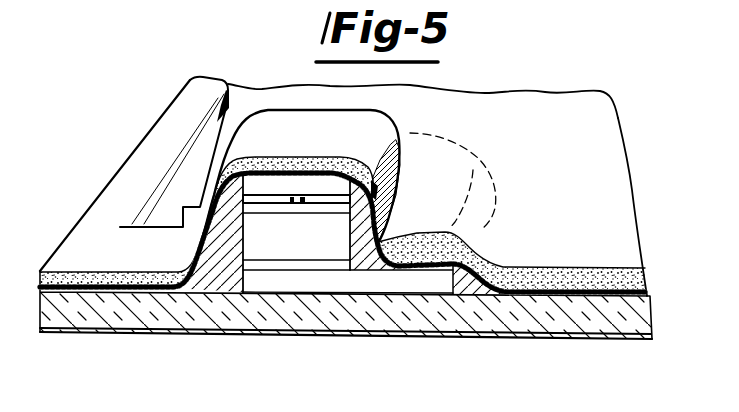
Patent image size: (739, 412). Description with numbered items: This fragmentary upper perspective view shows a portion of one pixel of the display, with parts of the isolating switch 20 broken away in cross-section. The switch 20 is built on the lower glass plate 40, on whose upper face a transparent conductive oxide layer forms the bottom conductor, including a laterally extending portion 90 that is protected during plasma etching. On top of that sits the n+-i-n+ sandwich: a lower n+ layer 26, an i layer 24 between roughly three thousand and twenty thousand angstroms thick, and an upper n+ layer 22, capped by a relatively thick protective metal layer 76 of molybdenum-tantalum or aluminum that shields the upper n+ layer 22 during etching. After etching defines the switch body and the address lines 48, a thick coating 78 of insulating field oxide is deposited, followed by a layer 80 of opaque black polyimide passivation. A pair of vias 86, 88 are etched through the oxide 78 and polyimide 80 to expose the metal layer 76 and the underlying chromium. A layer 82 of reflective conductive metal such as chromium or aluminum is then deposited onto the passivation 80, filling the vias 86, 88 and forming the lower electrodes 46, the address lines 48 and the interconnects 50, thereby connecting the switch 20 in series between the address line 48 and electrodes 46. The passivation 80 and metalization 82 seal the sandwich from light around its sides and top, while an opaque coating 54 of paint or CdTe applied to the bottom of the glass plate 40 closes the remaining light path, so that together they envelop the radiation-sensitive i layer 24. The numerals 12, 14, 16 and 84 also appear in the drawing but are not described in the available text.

The transparent conductive oxide electrode 12 is at (447, 278).
The transparent conductive oxide layer 14 is at (381, 266).
The photovoltaic cell 16 is at (448, 406).
The switch 20 is at (407, 123).
The upper n+ layer 22 is at (252, 200).
The i layer 24 is at (256, 256).
The lower n+ layer 26 is at (278, 262).
The lower glass plate 40 is at (140, 317).
The lower electrodes 46 is at (583, 137).
The address lines 48 is at (176, 93).
The interconnects 50 is at (143, 258).
The opaque coating 54 is at (625, 305).
The metal layer 76 is at (270, 196).
The coating of insulating field oxide 78 is at (347, 177).
The layer of opaque passivation 80 is at (45, 287).
The layer of reflective conductive metal 82 is at (107, 187).
The raised ridge of coating 84 is at (377, 148).
The via 86 is at (303, 178).
The via 88 is at (410, 218).
The laterally extending portion of the TCO 90 is at (413, 297).